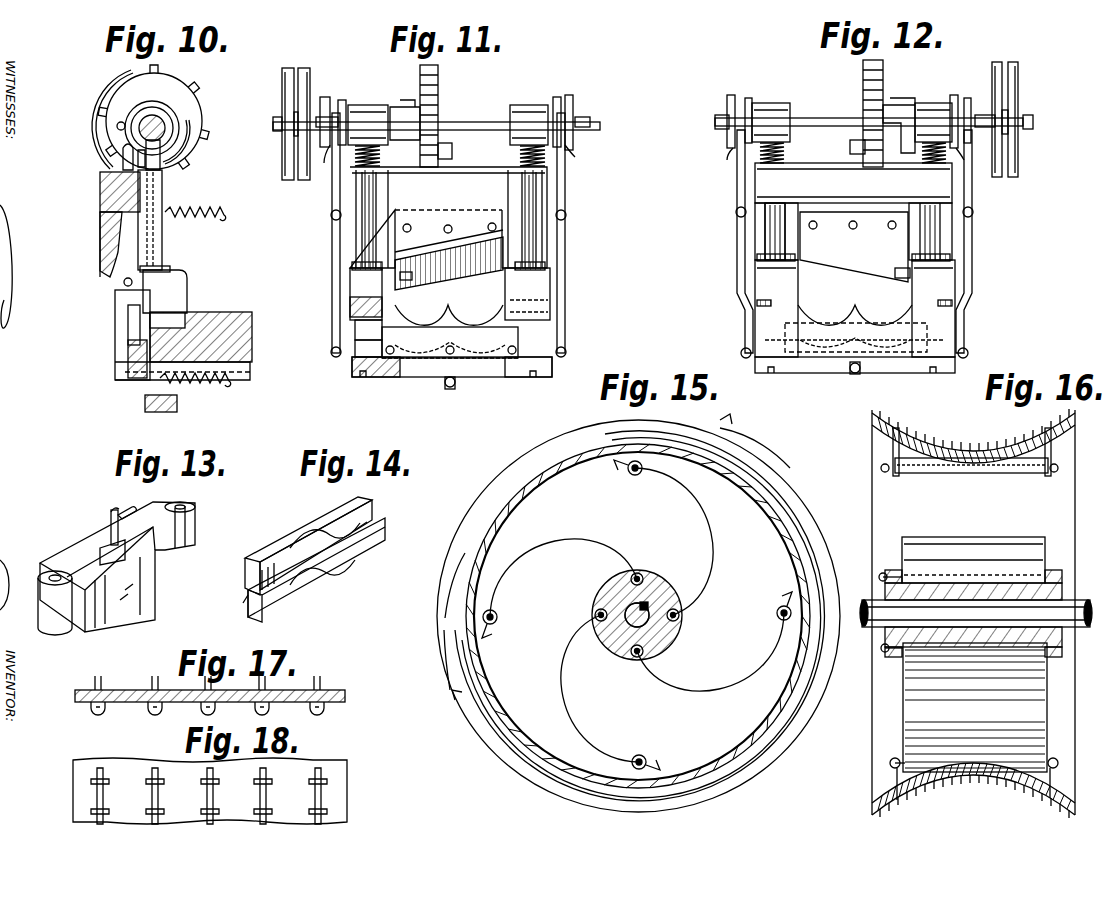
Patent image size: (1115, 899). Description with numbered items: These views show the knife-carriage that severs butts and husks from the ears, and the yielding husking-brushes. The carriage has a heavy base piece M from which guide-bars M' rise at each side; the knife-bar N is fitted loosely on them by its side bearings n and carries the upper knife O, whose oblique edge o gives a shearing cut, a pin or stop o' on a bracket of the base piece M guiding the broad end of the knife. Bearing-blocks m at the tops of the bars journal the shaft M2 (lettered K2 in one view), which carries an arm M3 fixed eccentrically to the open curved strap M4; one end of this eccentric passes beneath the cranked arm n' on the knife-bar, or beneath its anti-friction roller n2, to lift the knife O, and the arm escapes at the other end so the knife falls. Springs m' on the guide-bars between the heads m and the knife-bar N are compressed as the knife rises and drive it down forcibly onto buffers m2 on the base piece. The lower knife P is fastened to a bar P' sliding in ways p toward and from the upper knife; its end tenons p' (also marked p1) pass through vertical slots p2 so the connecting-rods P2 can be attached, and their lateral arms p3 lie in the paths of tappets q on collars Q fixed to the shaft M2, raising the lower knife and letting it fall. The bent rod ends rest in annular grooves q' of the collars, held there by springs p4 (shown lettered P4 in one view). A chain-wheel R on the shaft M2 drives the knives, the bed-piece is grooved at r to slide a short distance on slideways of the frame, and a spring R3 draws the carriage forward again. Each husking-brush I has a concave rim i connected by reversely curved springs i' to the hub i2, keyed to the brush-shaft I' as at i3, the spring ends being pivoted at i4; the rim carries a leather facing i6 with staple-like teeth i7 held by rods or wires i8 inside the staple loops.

In FIG. 10, the base piece M is at (188, 332).
In FIG. 11, the base piece M is at (450, 335).
In FIG. 12, the base piece M is at (855, 308).
In FIG. 10, the guide-bars M' is at (160, 220).
In FIG. 11, the guide-bars M' is at (449, 219).
In FIG. 12, the guide-bars M' is at (862, 231).
In FIG. 10, the shaft M2 is at (170, 120).
In FIG. 12, the shaft M2 is at (835, 118).
In FIG. 10, the arm M3 is at (168, 163).
In FIG. 11, the arm M3 is at (406, 140).
In FIG. 12, the arm M3 is at (892, 160).
In FIG. 10, the curved strap or band M4 is at (122, 84).
In FIG. 11, the curved strap or band M4 is at (438, 86).
In FIG. 12, the curved strap or band M4 is at (883, 81).
In FIG. 11, the shaft K2 is at (483, 122).
In FIG. 11, the bearing-blocks m is at (448, 125).
In FIG. 12, the bearing-blocks m is at (852, 122).
In FIG. 11, the springs m' is at (450, 168).
In FIG. 12, the springs m' is at (853, 153).
In FIG. 10, the buffers m2 is at (180, 275).
In FIG. 11, the buffers m2 is at (352, 266).
In FIG. 12, the buffers m2 is at (853, 250).
In FIG. 10, the knife-bar N is at (100, 200).
In FIG. 11, the knife-bar N is at (448, 217).
In FIG. 12, the knife-bar N is at (853, 183).
In FIG. 13, the knife-bar N is at (117, 567).
In FIG. 11, the side bearings n is at (449, 219).
In FIG. 12, the side bearings n is at (853, 219).
In FIG. 13, the side bearings n is at (101, 568).
In FIG. 10, the cranked arm n' is at (108, 157).
In FIG. 11, the cranked arm n' is at (455, 150).
In FIG. 12, the cranked arm n' is at (843, 146).
In FIG. 13, the cranked arm n' is at (95, 527).
In FIG. 13, the anti-friction roller n2 is at (112, 503).
In FIG. 11, the upper knife O is at (468, 277).
In FIG. 12, the upper knife O is at (855, 284).
In FIG. 10, the oblique or inclined edge o is at (111, 261).
In FIG. 13, the oblique or inclined edge o is at (128, 613).
In FIG. 10, the pin or stop o' is at (142, 287).
In FIG. 11, the pin or stop o' is at (414, 285).
In FIG. 12, the pin or stop o' is at (896, 268).
In FIG. 10, the lower knife P is at (171, 366).
In FIG. 11, the lower knife P is at (450, 342).
In FIG. 12, the lower knife P is at (855, 337).
In FIG. 14, the lower knife P is at (308, 546).
In FIG. 10, the bar P' is at (140, 401).
In FIG. 11, the bar P' is at (450, 357).
In FIG. 12, the bar P' is at (884, 384).
In FIG. 14, the bar P' is at (316, 570).
In FIG. 10, the connecting-rods P2 is at (128, 322).
In FIG. 11, the connecting-rods P2 is at (332, 192).
In FIG. 12, the connecting-rods P2 is at (737, 196).
In FIG. 10, the spring P4 is at (196, 206).
In FIG. 10, the ways p is at (148, 311).
In FIG. 14, the end tenons p' is at (308, 570).
In FIG. 10, the block p1 is at (128, 348).
In FIG. 11, the block p1 is at (435, 348).
In FIG. 11, the vertical slots p2 is at (368, 330).
In FIG. 10, the lateral arms p3 is at (118, 124).
In FIG. 11, the lateral arms p3 is at (320, 116).
In FIG. 12, the lateral arms p3 is at (715, 118).
In FIG. 11, the springs p4 is at (332, 218).
In FIG. 12, the springs p4 is at (736, 215).
In FIG. 10, the collars Q is at (152, 112).
In FIG. 11, the collars Q is at (346, 105).
In FIG. 12, the collars Q is at (731, 96).
In FIG. 11, the tappets q is at (448, 163).
In FIG. 12, the tappets q is at (848, 159).
In FIG. 11, the annular grooves q' is at (450, 114).
In FIG. 12, the annular grooves q' is at (859, 108).
In FIG. 10, the chain-wheel R is at (190, 94).
In FIG. 11, the chain-wheel R is at (282, 104).
In FIG. 12, the chain-wheel R is at (1018, 101).
In FIG. 10, the spring R3 is at (205, 388).
In FIG. 11, the spring R3 is at (456, 388).
In FIG. 12, the spring R3 is at (852, 380).
In FIG. 11, the grooves r is at (366, 378).
In FIG. 12, the grooves r is at (770, 375).
In FIG. 16, the husking-brushes I is at (981, 612).
In FIG. 15, the hub shaft I' is at (666, 614).
In FIG. 15, the rims i is at (638, 613).
In FIG. 16, the rims i is at (967, 614).
In FIG. 15, the springs i' is at (637, 615).
In FIG. 16, the springs i' is at (995, 609).
In FIG. 15, the hubs i2 is at (602, 598).
In FIG. 16, the hubs i2 is at (1052, 632).
In FIG. 15, the key i3 is at (652, 580).
In FIG. 15, the pivotal connections i4 is at (628, 472).
In FIG. 16, the pivotal connections i4 is at (922, 474).
In FIG. 16, the leather facing i6 is at (910, 428).
In FIG. 17, the leather facing i6 is at (135, 690).
In FIG. 18, the leather facing i6 is at (354, 790).
In FIG. 16, the staple-like metal teeth i7 is at (978, 430).
In FIG. 17, the staple-like metal teeth i7 is at (95, 682).
In FIG. 18, the staple-like metal teeth i7 is at (218, 808).
In FIG. 17, the rods or wires i8 is at (150, 708).
In FIG. 18, the rods or wires i8 is at (104, 798).